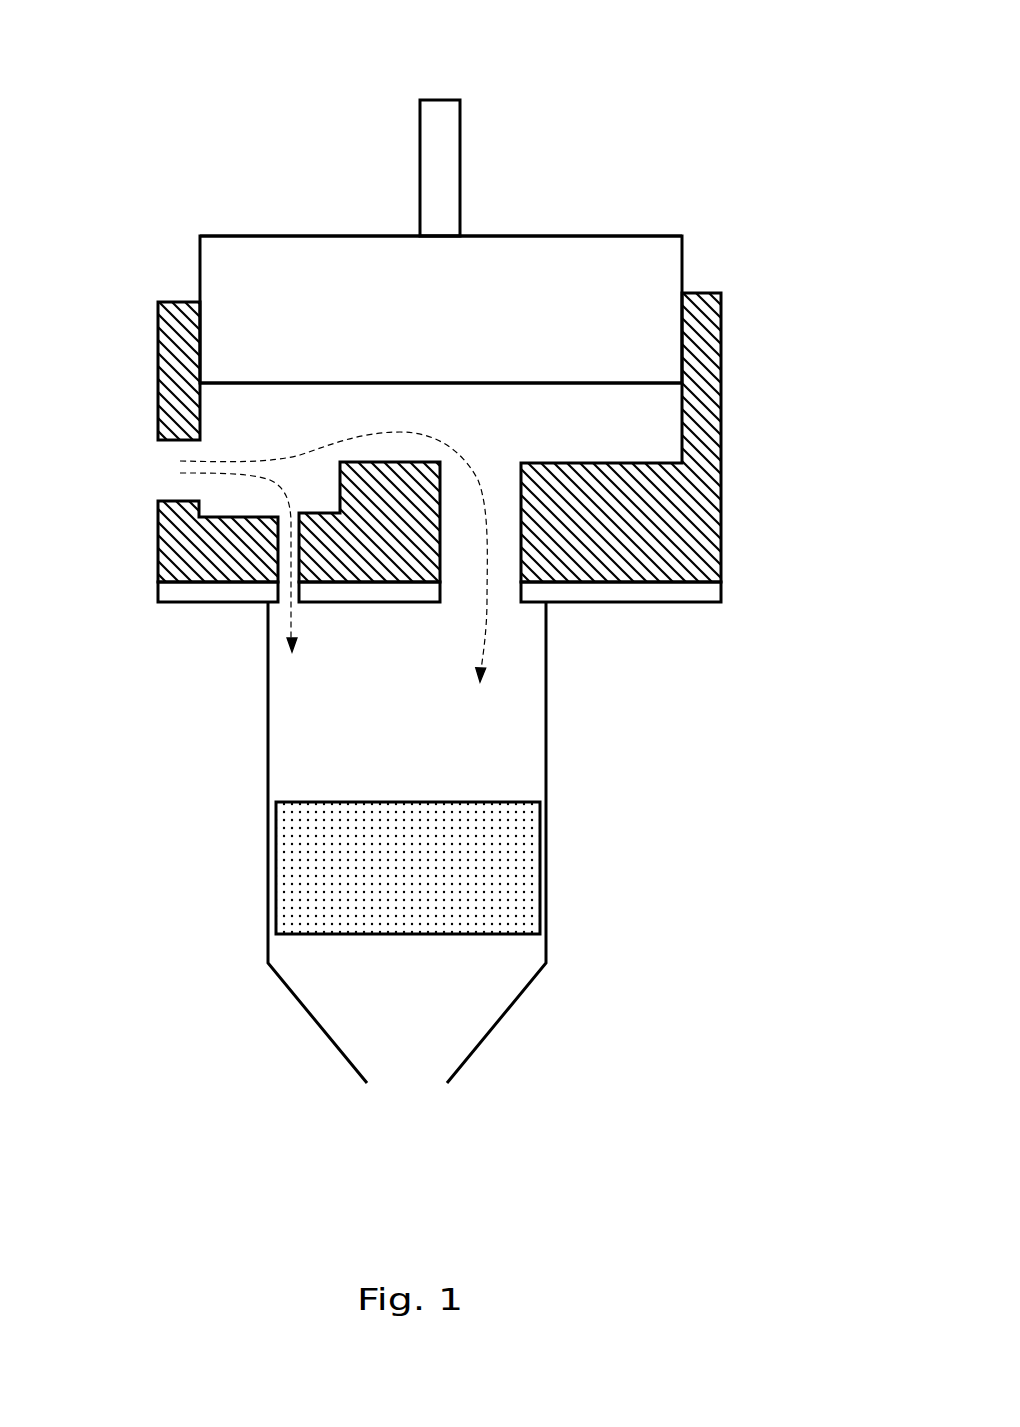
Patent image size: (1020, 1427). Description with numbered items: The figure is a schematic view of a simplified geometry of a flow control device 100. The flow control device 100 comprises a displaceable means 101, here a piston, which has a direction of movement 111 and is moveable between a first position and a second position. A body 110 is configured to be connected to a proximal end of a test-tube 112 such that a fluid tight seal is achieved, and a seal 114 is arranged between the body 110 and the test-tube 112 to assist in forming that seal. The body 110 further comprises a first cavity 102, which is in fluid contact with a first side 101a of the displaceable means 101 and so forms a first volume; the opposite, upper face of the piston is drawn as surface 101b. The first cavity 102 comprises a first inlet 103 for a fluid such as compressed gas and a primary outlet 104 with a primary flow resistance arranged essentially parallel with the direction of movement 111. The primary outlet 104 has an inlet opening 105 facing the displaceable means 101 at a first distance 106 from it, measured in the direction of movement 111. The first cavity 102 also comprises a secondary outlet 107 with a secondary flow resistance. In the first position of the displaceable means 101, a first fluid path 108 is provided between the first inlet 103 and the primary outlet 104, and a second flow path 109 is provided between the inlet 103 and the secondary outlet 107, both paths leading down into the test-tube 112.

The flow control device 100 is at (275, 157).
The displaceable means 101 is at (600, 236).
The first side of the displaceable means 101a is at (653, 383).
The top surface of piston 101b is at (657, 234).
The first cavity 102 is at (313, 418).
The first inlet 103 is at (135, 456).
The primary outlet 104 is at (518, 613).
The inlet opening 105 is at (502, 454).
The first distance 106 is at (541, 462).
The secondary outlet 107 is at (266, 621).
The first fluid path 108 is at (485, 670).
The second flow path 109 is at (303, 633).
The body 110 is at (722, 513).
The direction of movement 111 is at (440, 2).
The test-tube 112 is at (300, 1005).
The seal 114 is at (705, 602).